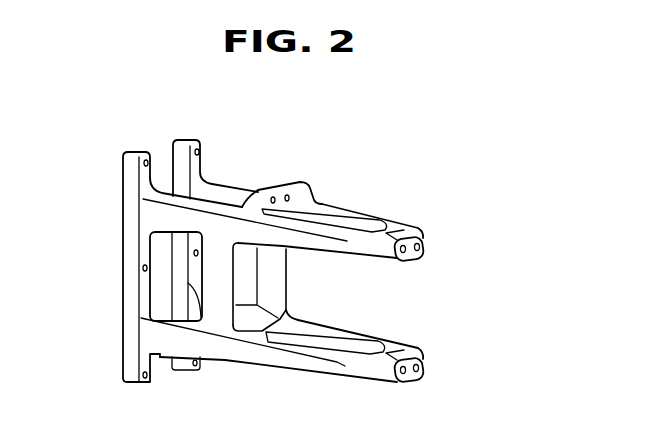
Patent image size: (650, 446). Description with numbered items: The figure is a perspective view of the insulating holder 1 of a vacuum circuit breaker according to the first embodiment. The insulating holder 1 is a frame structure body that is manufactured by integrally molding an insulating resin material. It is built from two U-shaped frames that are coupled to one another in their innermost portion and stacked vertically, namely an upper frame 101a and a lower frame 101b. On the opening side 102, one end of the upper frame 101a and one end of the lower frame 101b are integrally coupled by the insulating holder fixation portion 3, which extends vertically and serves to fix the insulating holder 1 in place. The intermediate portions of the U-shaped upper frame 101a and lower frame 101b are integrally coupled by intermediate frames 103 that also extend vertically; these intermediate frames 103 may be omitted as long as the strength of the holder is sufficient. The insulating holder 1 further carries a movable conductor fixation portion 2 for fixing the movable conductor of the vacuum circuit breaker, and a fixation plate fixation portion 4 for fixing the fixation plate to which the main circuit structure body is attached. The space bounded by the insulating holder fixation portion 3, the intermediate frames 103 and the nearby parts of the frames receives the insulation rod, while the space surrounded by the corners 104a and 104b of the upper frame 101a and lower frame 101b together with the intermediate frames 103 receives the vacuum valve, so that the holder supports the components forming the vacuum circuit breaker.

The insulating holder 1 is at (282, 368).
The movable conductor fixation portion 2 is at (300, 182).
The insulating holder fixation portion 3 is at (138, 215).
The fixation plate fixation portion 4 is at (428, 247).
The upper frame 101a is at (358, 188).
The lower frame 101b is at (338, 304).
The opening side 102 is at (163, 158).
The intermediate frame 103 is at (217, 283).
The corner of the upper frame 104a is at (365, 262).
The corner of the lower frame 104b is at (380, 331).